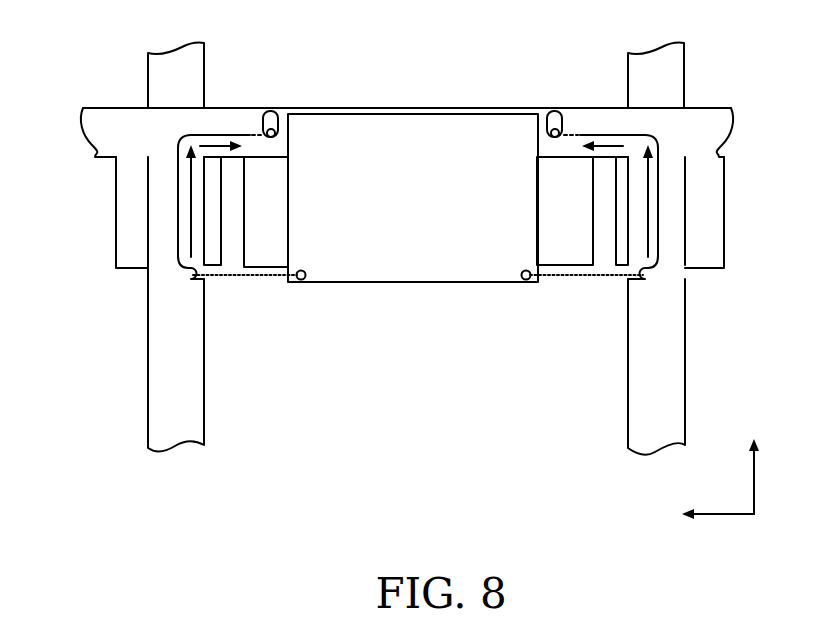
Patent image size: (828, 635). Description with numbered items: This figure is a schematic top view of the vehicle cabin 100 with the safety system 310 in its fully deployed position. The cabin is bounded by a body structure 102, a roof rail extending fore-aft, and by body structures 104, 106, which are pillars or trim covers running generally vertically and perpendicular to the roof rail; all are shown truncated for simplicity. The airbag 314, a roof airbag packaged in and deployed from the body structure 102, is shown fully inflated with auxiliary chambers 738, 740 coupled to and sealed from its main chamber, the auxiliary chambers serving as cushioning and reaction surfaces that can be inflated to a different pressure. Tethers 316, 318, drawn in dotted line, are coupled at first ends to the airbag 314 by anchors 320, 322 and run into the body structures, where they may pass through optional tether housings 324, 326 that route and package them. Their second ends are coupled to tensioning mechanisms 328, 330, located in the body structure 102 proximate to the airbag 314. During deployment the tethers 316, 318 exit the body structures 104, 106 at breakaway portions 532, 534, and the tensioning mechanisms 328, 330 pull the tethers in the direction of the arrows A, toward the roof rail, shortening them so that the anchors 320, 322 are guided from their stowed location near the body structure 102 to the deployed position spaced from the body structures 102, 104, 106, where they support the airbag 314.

The vehicle cabin 100 is at (402, 407).
The body structure 102 is at (107, 107).
The body structure 104 is at (148, 412).
The body structure 106 is at (628, 412).
The safety system 310 is at (422, 307).
The airbag 314 is at (410, 114).
The tether 316 is at (238, 277).
The tether 318 is at (584, 277).
The anchor 320 is at (300, 280).
The anchor 322 is at (526, 280).
The tether housing 324 is at (233, 134).
The tether housing 326 is at (597, 134).
The tensioning mechanism 328 is at (271, 111).
The tensioning mechanism 330 is at (553, 111).
The breakaway portion 532 is at (186, 287).
The breakaway portion 534 is at (656, 285).
The auxiliary chamber 738 is at (725, 240).
The auxiliary chamber 740 is at (116, 237).
The arrows A is at (190, 198).